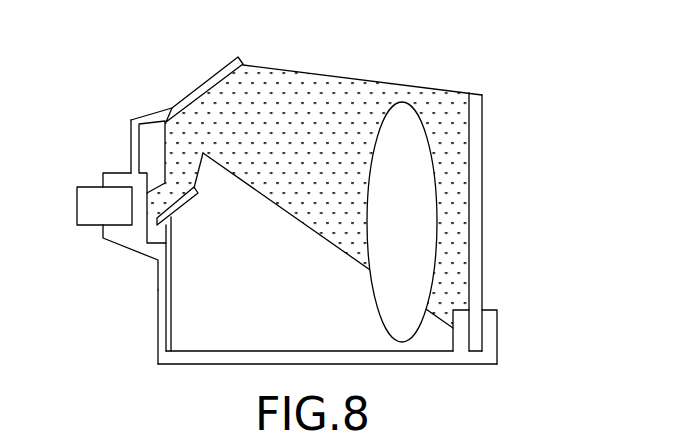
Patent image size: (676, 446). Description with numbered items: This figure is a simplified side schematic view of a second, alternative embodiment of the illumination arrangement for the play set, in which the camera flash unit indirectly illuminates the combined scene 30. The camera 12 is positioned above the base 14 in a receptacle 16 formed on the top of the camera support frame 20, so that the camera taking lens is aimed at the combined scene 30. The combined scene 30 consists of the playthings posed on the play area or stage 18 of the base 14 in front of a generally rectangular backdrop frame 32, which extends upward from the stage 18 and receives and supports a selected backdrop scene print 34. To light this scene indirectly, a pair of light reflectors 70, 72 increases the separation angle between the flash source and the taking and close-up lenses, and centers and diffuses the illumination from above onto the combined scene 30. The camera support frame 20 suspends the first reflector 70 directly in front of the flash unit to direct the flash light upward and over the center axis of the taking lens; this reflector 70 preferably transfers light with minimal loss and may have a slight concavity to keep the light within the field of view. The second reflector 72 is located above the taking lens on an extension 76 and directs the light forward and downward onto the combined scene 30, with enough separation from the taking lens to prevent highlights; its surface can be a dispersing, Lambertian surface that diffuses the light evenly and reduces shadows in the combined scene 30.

The camera 12 is at (78, 226).
The base 14 is at (315, 349).
The receptacle 16 is at (114, 171).
The play area or stage 18 is at (420, 288).
The camera support frame 20 is at (157, 292).
The combined scene 30 is at (427, 80).
The backdrop frame 32 is at (500, 330).
The backdrop scene print 34 is at (485, 223).
The first reflector 70 is at (184, 206).
The second reflector 72 is at (205, 88).
The extension 76 is at (131, 122).